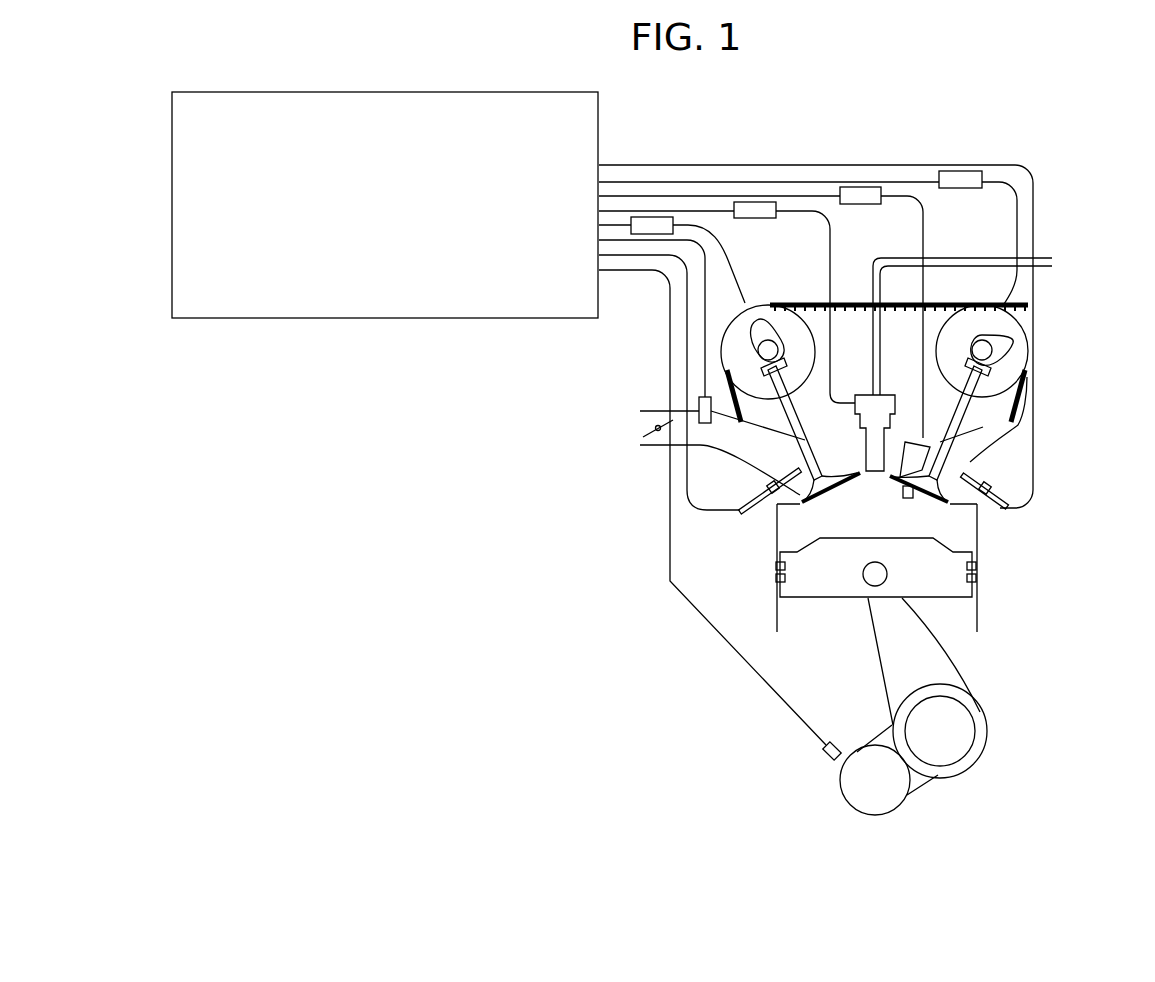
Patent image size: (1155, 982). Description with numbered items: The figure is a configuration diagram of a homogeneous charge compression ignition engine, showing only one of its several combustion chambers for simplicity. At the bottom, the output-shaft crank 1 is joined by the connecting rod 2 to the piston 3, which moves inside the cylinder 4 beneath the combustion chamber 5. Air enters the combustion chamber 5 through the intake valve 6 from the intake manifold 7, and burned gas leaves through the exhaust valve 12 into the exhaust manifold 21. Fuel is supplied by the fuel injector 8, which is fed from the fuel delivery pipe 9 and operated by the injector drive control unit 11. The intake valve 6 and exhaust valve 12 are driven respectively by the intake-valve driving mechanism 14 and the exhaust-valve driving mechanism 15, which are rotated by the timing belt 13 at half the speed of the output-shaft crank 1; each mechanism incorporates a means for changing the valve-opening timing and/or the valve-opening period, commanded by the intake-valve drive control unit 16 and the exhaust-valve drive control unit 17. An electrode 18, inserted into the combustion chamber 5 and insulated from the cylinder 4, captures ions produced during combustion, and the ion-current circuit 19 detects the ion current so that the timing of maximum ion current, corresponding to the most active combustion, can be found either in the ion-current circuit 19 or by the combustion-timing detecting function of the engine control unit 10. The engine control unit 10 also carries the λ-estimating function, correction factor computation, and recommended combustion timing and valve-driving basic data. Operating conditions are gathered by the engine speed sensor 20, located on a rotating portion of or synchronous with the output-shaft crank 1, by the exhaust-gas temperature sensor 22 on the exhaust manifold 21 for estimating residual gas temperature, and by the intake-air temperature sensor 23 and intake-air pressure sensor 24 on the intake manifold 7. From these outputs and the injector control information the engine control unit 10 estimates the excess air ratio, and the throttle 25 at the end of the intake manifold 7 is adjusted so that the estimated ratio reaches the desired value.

The output-shaft crank 1 is at (893, 790).
The connecting rod 2 is at (922, 670).
The piston 3 is at (950, 575).
The cylinder 4 is at (957, 533).
The combustion chamber 5 is at (893, 478).
The intake valve 6 is at (803, 500).
The intake manifold 7 is at (728, 445).
The fuel injector 8 is at (893, 395).
The fuel delivery pipe 9 is at (1032, 262).
The engine control unit 10 is at (453, 318).
The injector drive control unit 11 is at (752, 202).
The exhaust valve 12 is at (940, 442).
The timing belt 13 is at (985, 395).
The intake-valve driving mechanism 14 is at (780, 327).
The exhaust-valve driving mechanism 15 is at (1010, 327).
The intake-valve drive control unit 16 is at (653, 217).
The exhaust-valve drive control unit 17 is at (962, 171).
The electrode 18 is at (998, 508).
The ion-current circuit 19 is at (856, 187).
The engine speed sensor 20 is at (823, 748).
The exhaust manifold 21 is at (972, 462).
The exhaust-gas temperature sensor 22 is at (978, 477).
The intake-air temperature sensor 23 is at (762, 498).
The intake-air pressure sensor 24 is at (700, 397).
The throttle 25 is at (643, 437).